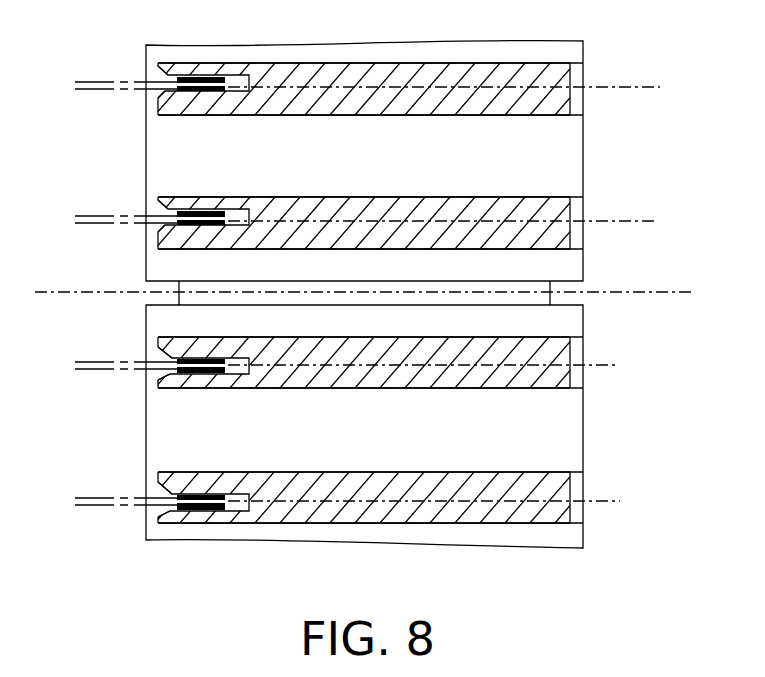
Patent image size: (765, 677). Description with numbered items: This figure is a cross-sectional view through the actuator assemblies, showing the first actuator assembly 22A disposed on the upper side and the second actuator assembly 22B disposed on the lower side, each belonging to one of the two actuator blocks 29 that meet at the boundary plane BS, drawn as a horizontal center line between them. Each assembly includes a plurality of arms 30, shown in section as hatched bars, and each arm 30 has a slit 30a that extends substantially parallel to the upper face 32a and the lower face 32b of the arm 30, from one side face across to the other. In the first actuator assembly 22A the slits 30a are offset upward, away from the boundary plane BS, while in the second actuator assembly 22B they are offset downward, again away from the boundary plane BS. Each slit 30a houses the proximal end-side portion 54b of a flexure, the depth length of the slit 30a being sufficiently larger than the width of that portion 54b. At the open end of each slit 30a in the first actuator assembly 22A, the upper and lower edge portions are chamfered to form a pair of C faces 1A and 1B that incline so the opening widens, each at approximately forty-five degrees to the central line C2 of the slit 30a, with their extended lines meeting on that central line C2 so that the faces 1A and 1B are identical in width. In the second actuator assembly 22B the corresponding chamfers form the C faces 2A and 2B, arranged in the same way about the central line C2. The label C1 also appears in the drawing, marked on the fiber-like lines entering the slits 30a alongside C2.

The first inclined face 1A is at (173, 72).
The second inclined face 1B is at (163, 93).
The first inclined face 2A is at (166, 377).
The second inclined face 2B is at (159, 350).
The first actuator assembly 22A is at (600, 82).
The second actuator assembly 22B is at (592, 388).
The actuator block 29 is at (585, 155).
The arm 30 is at (451, 72).
The slit 30a is at (233, 75).
The upper face 32a is at (319, 63).
The lower face 32b is at (371, 115).
The proximal end-side portion of the flexure 54b is at (196, 77).
The first optical fiber cable C1 is at (98, 89).
The central line of the slit C2 is at (98, 82).
The boundary plane BS is at (648, 294).